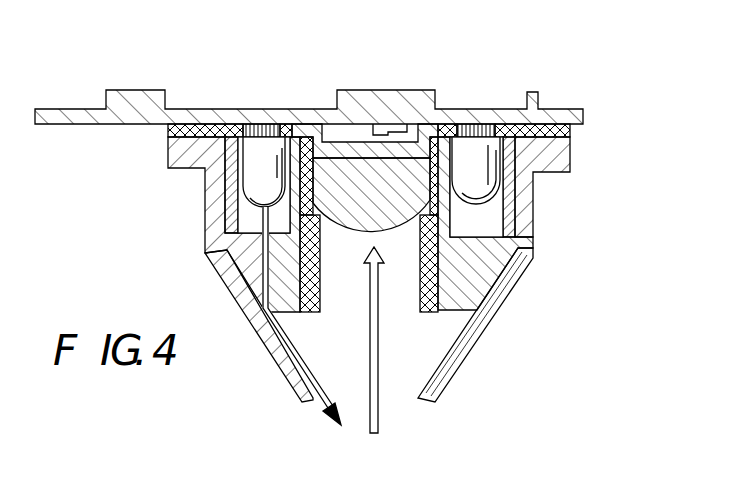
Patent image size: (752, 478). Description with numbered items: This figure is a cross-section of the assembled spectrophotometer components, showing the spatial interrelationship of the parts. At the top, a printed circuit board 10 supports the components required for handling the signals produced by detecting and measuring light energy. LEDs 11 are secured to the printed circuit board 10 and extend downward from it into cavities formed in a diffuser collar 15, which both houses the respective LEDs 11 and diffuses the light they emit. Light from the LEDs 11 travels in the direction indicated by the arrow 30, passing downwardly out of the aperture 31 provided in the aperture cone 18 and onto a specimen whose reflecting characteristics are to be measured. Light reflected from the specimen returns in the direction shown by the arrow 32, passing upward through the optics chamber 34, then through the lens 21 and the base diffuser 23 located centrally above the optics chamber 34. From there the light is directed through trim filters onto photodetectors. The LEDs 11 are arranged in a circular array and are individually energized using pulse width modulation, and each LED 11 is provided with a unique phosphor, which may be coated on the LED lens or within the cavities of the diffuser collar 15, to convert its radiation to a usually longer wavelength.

The printed circuit board 10 is at (585, 120).
The LEDs 11 is at (245, 177).
The diffuser collar 15 is at (487, 268).
The aperture cone 18 is at (477, 343).
The lens 21 is at (403, 180).
The base diffuser 23 is at (352, 141).
The arrow 30 is at (297, 353).
The aperture 31 is at (355, 420).
The arrow 32 is at (378, 422).
The optics chamber 34 is at (414, 303).